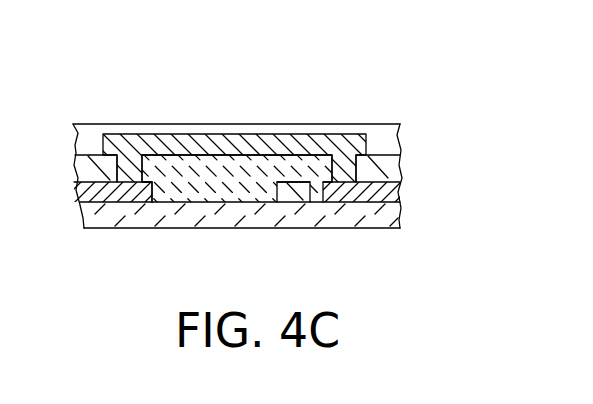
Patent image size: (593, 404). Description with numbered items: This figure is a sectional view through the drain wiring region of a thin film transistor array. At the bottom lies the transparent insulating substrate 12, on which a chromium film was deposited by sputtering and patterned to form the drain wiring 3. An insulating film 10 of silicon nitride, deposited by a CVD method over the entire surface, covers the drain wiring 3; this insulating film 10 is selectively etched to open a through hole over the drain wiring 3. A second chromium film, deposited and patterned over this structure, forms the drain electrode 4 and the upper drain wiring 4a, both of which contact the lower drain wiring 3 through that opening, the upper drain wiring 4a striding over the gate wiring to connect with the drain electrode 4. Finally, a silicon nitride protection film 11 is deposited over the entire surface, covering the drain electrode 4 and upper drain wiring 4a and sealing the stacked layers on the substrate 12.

The drain wiring 3 is at (77, 192).
The drain electrode 4 is at (237, 143).
The upper drain wiring 4a is at (290, 163).
The insulating film 10 is at (157, 170).
The protection film 11 is at (397, 134).
The transparent insulating substrate 12 is at (388, 221).